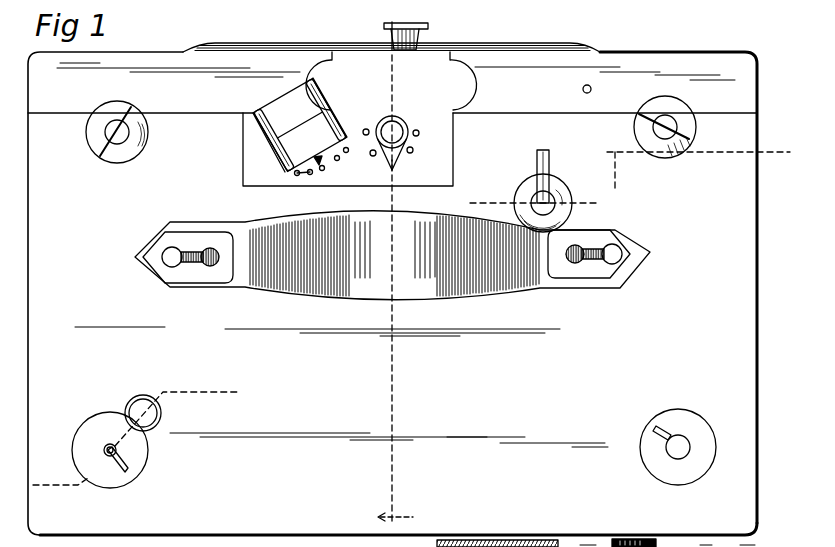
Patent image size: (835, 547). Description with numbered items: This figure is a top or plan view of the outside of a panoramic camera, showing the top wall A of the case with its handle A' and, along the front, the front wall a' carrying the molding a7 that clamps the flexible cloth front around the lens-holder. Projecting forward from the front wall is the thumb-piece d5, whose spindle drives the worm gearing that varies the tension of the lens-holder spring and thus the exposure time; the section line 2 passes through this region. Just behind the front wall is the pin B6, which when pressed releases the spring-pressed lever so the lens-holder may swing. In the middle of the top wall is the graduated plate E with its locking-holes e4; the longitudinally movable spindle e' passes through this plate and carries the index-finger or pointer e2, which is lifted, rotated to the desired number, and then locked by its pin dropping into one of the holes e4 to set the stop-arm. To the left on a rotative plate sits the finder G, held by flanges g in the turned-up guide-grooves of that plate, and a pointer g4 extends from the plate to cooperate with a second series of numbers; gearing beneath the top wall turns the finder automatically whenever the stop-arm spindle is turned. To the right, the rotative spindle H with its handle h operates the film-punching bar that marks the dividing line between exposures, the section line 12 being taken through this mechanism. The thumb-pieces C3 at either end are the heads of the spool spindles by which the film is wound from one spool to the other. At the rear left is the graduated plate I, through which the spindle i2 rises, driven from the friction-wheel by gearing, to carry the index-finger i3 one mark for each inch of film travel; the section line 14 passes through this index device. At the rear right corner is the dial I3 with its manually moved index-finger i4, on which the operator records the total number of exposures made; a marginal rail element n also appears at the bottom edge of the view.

The front wall a' is at (392, 276).
The molding a7 is at (590, 42).
The thumb-piece d5 is at (430, 25).
The section line 2 is at (389, 25).
The plate E is at (364, 119).
The finder G is at (300, 125).
The flanges g is at (298, 146).
The index finger or pointer g4 is at (312, 176).
The spindle e' is at (295, 191).
The pointer E'' is at (403, 126).
The locking-holes e4 is at (420, 142).
The index-finger or pointer e2 is at (390, 172).
The thumb-pieces C3 is at (116, 142).
The pin B6 is at (590, 94).
The rotative spindle H is at (575, 200).
The handle h is at (549, 156).
The section line 12 is at (619, 180).
The handle A' is at (392, 255).
The top wall A is at (409, 449).
The graduated plate I is at (115, 462).
The index-finger i3 is at (112, 466).
The spindle i2 is at (107, 444).
The section line 14 is at (133, 436).
The dial I3 is at (663, 430).
The index-finger i4 is at (672, 412).
The rail n is at (475, 541).